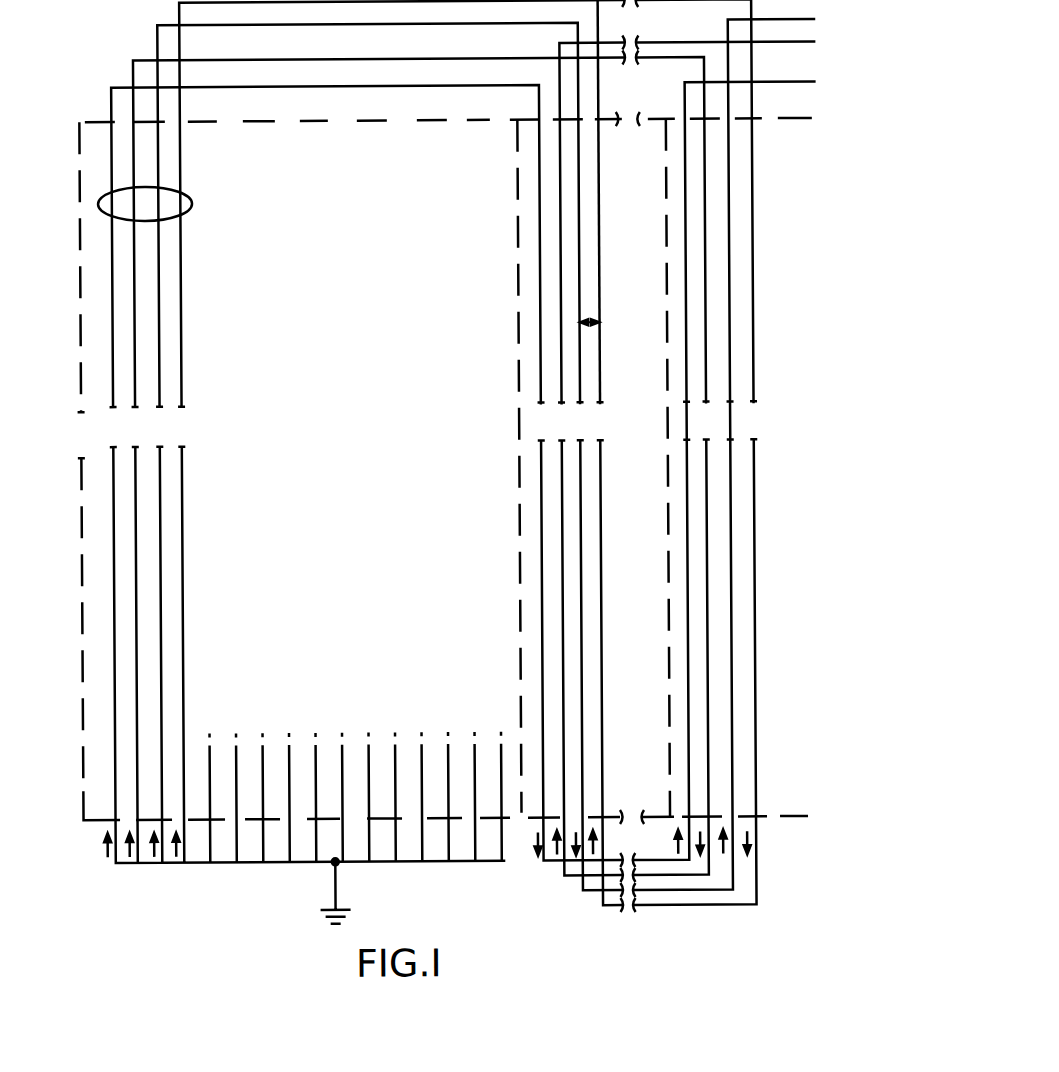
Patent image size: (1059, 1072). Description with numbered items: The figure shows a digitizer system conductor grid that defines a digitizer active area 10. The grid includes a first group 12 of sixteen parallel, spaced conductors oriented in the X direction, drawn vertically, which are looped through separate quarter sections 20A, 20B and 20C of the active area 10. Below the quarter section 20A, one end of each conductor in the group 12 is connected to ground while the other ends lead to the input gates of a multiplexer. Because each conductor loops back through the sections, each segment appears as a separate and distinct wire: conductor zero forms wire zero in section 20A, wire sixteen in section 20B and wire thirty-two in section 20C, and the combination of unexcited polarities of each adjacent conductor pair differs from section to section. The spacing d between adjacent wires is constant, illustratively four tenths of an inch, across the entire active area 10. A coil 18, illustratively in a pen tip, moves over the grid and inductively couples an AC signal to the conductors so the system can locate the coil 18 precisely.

The digitizer active area 10 is at (95, 120).
The first group of conductors 12 is at (194, 202).
The coil 18 is at (574, 636).
The first quarter section 20A is at (378, 360).
The second quarter section 20B is at (620, 357).
The third quarter section 20C is at (772, 358).
The spacing between adjacent wires d is at (595, 315).